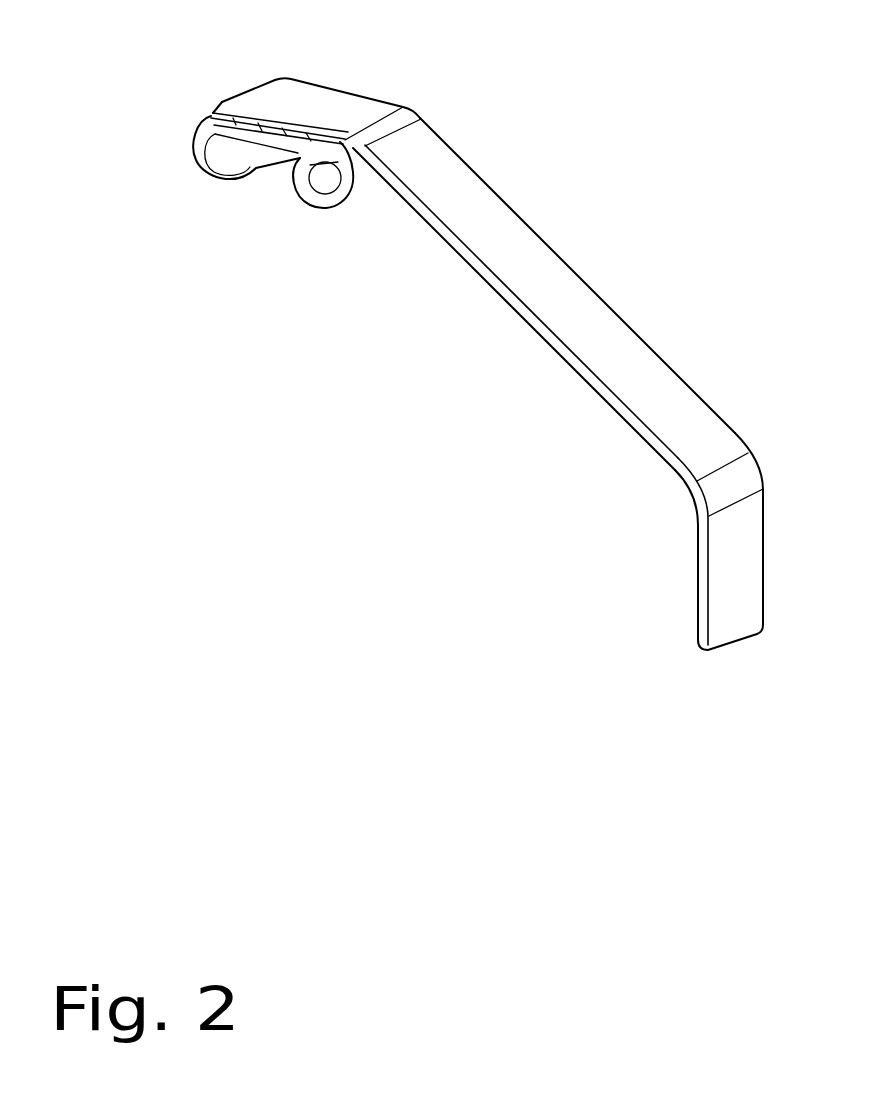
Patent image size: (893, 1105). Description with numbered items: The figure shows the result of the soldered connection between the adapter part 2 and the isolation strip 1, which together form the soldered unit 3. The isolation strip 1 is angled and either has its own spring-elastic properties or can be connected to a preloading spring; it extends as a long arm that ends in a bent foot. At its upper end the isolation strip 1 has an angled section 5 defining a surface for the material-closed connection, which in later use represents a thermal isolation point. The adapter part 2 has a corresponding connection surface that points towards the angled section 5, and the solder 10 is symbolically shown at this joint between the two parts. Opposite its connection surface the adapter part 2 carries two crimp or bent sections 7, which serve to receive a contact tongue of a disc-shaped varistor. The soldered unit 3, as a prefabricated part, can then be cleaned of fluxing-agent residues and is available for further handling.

The isolation strip 1 is at (500, 227).
The adapter part 2 is at (432, 332).
The soldered unit 3 is at (460, 342).
The angled section 5 is at (310, 97).
The bent sections 7 is at (205, 163).
The solder 10 is at (296, 133).